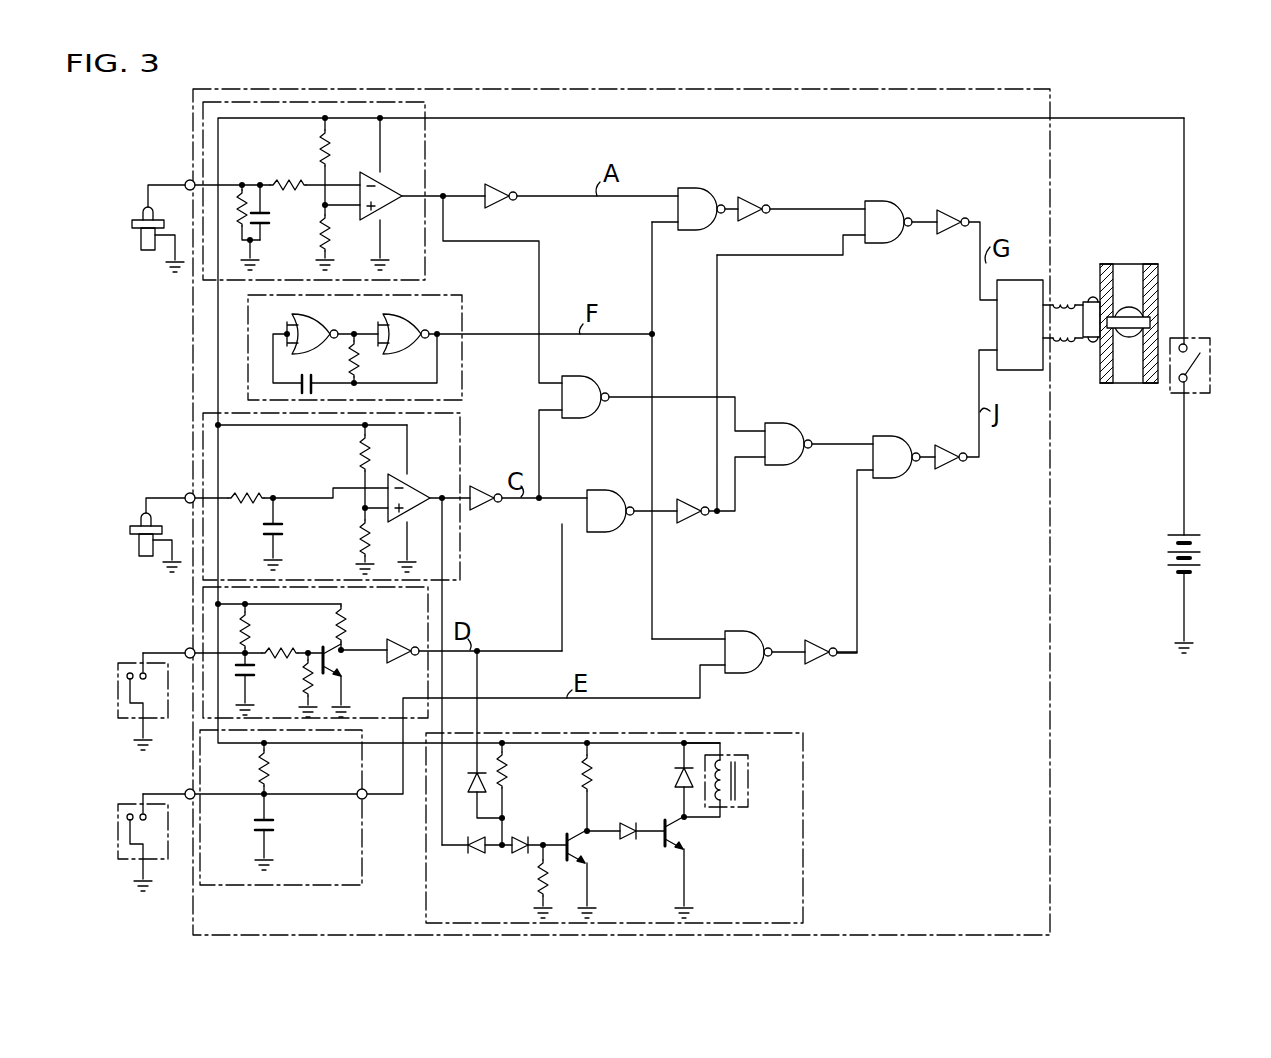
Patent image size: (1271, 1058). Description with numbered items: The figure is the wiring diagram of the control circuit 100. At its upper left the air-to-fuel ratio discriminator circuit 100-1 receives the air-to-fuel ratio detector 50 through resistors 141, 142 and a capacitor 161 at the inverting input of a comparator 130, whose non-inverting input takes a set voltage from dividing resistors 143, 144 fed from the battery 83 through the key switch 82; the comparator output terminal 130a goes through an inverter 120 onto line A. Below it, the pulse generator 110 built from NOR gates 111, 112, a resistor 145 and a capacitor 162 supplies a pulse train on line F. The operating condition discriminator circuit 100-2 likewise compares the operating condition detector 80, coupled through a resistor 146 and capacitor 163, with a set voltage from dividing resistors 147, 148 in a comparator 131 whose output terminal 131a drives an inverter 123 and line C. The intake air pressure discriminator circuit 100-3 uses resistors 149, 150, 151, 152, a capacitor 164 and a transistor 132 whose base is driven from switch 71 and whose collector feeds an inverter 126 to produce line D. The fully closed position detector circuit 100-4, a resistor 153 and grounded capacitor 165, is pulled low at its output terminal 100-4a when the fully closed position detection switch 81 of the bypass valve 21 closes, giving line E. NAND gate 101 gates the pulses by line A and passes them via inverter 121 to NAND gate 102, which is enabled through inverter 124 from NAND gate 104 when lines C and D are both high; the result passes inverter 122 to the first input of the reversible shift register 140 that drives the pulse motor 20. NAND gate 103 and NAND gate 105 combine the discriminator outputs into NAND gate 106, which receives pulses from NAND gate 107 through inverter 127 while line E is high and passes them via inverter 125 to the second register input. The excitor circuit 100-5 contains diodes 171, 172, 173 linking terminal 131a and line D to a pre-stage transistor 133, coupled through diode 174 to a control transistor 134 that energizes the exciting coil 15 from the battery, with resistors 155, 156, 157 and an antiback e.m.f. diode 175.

The control circuit 100 is at (1050, 808).
The air-to-fuel ratio discriminator circuit 100-1 is at (430, 165).
The operating condition discriminator circuit 100-2 is at (460, 452).
The intake air pressure discriminator circuit 100-3 is at (430, 688).
The fully closed position detector circuit 100-4 is at (262, 885).
The output terminal 100-4a is at (363, 800).
The excitor circuit 100-5 is at (805, 808).
The air-to-fuel ratio detector 50 is at (131, 236).
The operating condition detector 80 is at (129, 540).
The switch 71 is at (118, 670).
The fully closed position detection switch 81 is at (118, 812).
The key switch 82 is at (1210, 356).
The battery 83 is at (1200, 553).
The resistor 141 is at (240, 192).
The resistor 142 is at (284, 180).
The dividing resistor 143 is at (337, 146).
The dividing resistor 144 is at (328, 240).
The capacitor 161 is at (268, 220).
The comparator 130 is at (381, 184).
The output terminal 130a is at (392, 204).
The inverter 120 is at (502, 185).
The NAND gate 101 is at (692, 189).
The inverter 121 is at (755, 197).
The NAND gate 102 is at (888, 201).
The inverter 122 is at (950, 210).
The reversible shift register 140 is at (997, 325).
The pulse motor 20 is at (1087, 335).
The bypass valve 21 is at (1129, 308).
The pulse generator 110 is at (466, 332).
The NOR gate 111 is at (316, 313).
The NOR gate 112 is at (408, 313).
The capacitor 162 is at (310, 364).
The resistor 145 is at (360, 360).
The NAND gate 103 is at (585, 378).
The NAND gate 104 is at (617, 495).
The inverter 124 is at (690, 500).
The NAND gate 105 is at (798, 423).
The NAND gate 106 is at (893, 436).
The inverter 125 is at (947, 446).
The NAND gate 107 is at (748, 630).
The inverter 127 is at (812, 641).
The resistor 146 is at (245, 497).
The dividing resistor 147 is at (358, 455).
The dividing resistor 148 is at (356, 545).
The capacitor 163 is at (284, 530).
The comparator 131 is at (410, 478).
The output terminal 131a is at (430, 495).
The inverter 123 is at (478, 512).
The resistor 149 is at (254, 622).
The resistor 150 is at (268, 655).
The resistor 151 is at (303, 685).
The resistor 152 is at (345, 625).
The capacitor 164 is at (254, 670).
The transistor 132 is at (342, 672).
The inverter 126 is at (405, 640).
The resistor 153 is at (270, 765).
The capacitor 165 is at (277, 828).
The resistor 155 is at (510, 762).
The resistor 156 is at (538, 880).
The resistor 157 is at (594, 775).
The diode 171 is at (485, 790).
The diode 172 is at (474, 855).
The diode 173 is at (522, 855).
The diode 174 is at (640, 815).
The antiback e.m.f. diode 175 is at (676, 772).
The pre-stage transistor 133 is at (588, 852).
The control transistor 134 is at (684, 840).
The exciting coil 15 is at (749, 762).